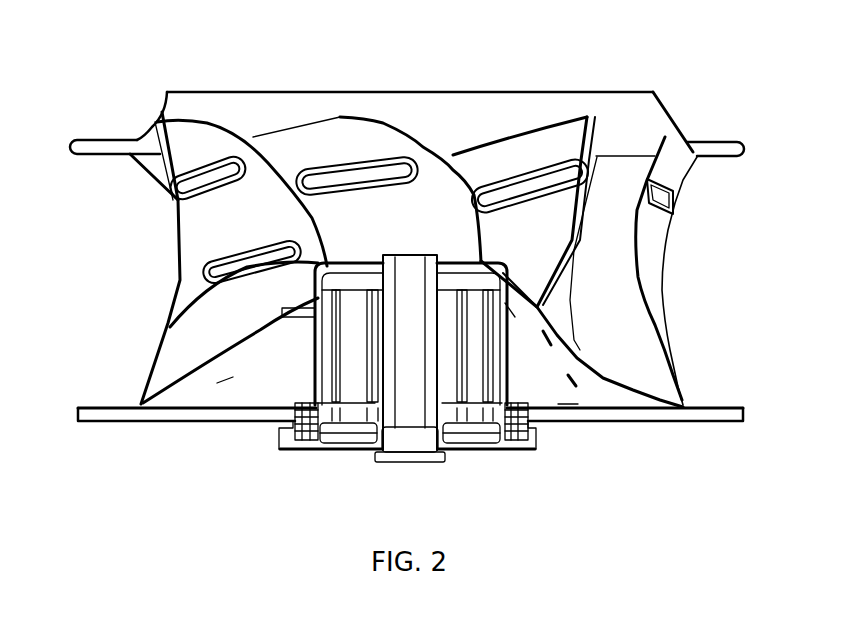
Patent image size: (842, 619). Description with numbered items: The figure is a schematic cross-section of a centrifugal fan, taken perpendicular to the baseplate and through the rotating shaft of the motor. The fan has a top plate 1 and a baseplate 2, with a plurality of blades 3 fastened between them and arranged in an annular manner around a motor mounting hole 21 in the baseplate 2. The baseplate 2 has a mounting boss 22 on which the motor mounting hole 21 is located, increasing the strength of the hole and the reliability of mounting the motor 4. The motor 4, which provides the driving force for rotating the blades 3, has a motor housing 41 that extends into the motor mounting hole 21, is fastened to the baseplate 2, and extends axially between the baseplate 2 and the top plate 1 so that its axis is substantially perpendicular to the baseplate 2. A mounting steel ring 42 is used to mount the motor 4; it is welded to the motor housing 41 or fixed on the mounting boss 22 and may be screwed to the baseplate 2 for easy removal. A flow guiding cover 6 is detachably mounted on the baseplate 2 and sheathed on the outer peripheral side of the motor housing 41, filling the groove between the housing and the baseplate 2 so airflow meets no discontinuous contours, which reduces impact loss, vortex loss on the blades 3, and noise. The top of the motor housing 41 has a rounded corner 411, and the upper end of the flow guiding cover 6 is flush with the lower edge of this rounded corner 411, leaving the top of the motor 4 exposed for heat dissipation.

The top plate 1 is at (385, 91).
The baseplate 2 is at (697, 425).
The motor mounting hole 21 is at (508, 352).
The mounting boss 22 is at (257, 375).
The blade 3 is at (630, 332).
The motor 4 is at (482, 390).
The motor housing 41 is at (508, 368).
The rounded corner 411 is at (479, 260).
The mounting steel ring 42 is at (285, 400).
The flow guiding cover 6 is at (296, 297).